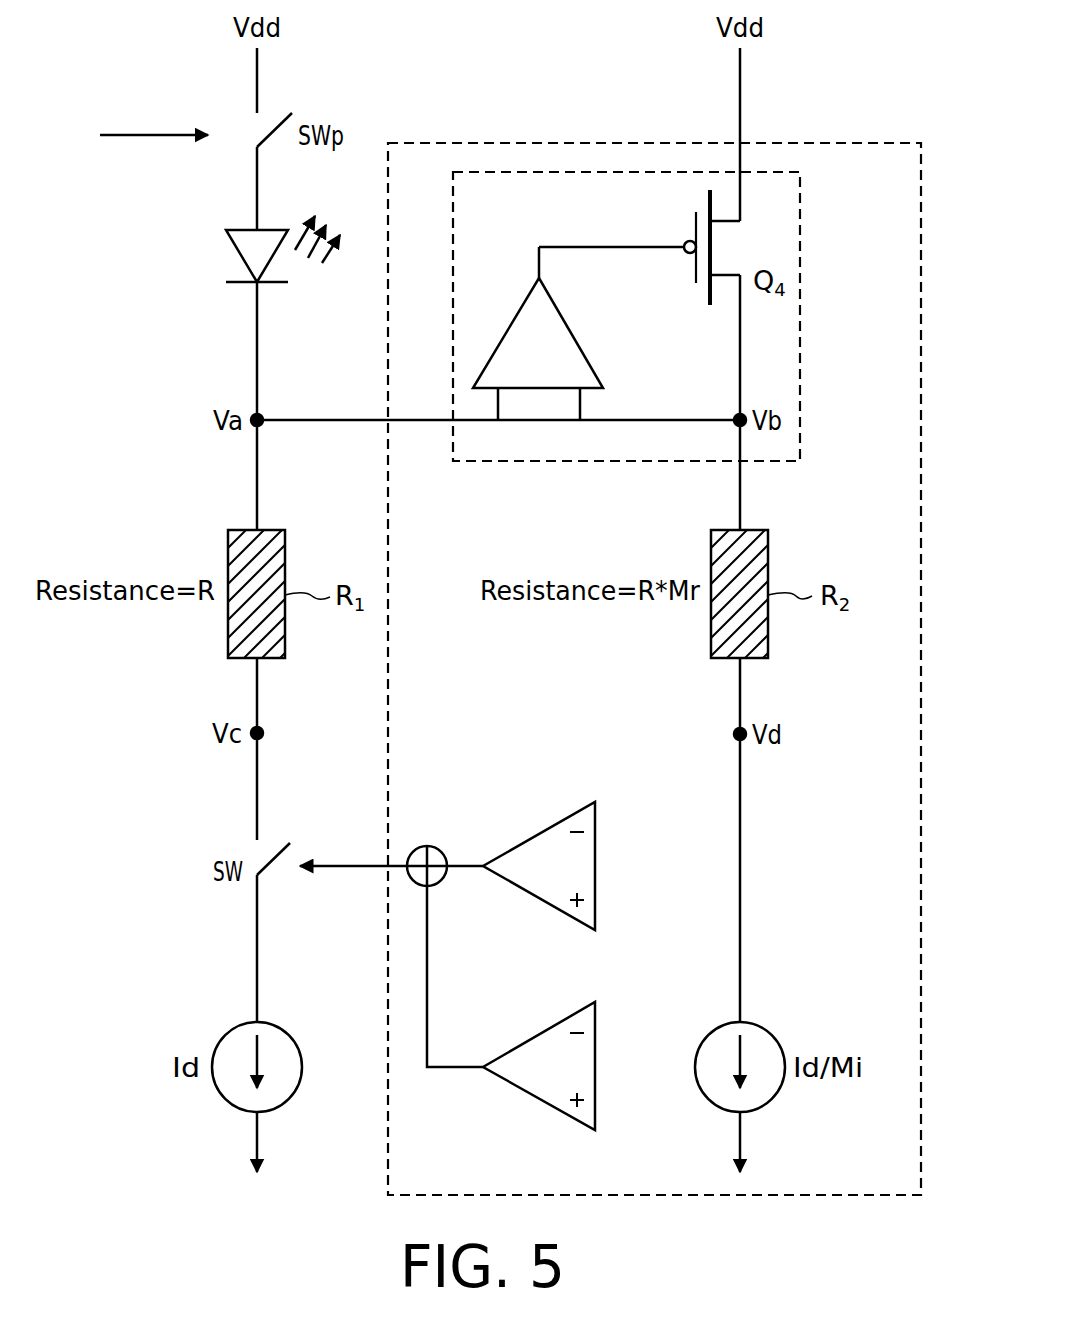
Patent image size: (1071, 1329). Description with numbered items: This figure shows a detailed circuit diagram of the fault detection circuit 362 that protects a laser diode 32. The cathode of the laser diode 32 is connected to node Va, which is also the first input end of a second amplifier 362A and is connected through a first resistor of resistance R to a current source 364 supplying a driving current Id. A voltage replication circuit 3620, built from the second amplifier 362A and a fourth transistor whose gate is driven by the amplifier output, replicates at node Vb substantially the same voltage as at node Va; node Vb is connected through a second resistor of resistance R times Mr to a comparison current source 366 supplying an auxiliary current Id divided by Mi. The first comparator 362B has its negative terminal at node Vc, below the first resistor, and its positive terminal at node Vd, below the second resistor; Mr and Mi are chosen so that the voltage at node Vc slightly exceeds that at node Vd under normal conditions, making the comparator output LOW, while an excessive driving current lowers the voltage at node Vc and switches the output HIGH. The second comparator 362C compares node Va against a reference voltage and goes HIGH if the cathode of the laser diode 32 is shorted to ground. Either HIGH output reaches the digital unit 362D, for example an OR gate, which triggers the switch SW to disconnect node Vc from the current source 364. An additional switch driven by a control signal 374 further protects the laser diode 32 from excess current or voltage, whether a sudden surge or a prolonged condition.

The control signal 374 is at (160, 133).
The laser diode 32 is at (237, 258).
The fault detection circuit 362 is at (877, 142).
The voltage replication circuit 3620 is at (800, 314).
The second amplifier 362A is at (575, 332).
The first comparator 362B is at (560, 818).
The second comparator 362C is at (558, 1020).
The digital unit 362D is at (427, 846).
The current source 364 is at (217, 1040).
The comparison current source 366 is at (778, 1040).